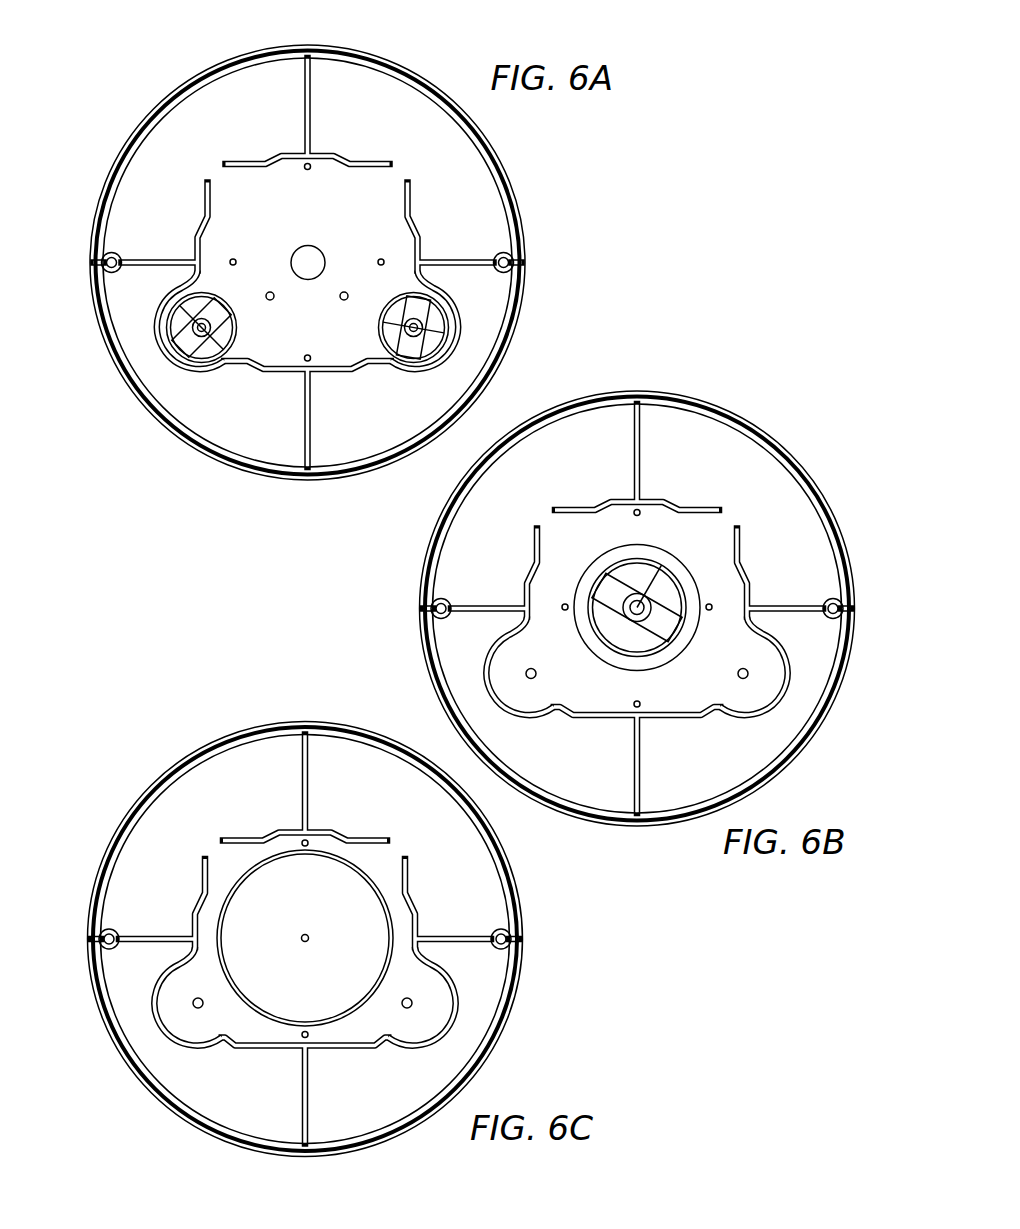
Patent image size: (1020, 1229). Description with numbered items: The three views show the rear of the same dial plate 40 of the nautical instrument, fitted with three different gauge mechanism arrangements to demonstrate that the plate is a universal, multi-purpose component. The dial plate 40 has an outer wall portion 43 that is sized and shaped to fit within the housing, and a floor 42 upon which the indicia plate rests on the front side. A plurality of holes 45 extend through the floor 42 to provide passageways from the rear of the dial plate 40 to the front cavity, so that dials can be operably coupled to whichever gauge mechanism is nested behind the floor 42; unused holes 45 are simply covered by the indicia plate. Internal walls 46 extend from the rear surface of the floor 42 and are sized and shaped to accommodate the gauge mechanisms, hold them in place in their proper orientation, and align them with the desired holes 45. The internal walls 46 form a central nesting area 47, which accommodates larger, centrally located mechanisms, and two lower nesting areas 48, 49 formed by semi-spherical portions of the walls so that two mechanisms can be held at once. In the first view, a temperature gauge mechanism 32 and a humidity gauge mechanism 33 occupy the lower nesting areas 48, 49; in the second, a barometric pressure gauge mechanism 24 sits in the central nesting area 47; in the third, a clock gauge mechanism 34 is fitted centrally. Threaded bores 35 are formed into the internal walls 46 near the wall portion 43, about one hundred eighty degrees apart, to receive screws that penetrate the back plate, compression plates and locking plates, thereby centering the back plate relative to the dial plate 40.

In FIG. 6B, the barometric pressure gauge mechanism 24 is at (733, 583).
In FIG. 6A, the temperature gauge mechanism 32 is at (478, 332).
In FIG. 6A, the humidity gauge mechanism 33 is at (142, 331).
In FIG. 6C, the clock gauge mechanism 34 is at (305, 938).
In FIG. 6A, the threaded bores 35 is at (310, 269).
In FIG. 6B, the threaded bores 35 is at (636, 611).
In FIG. 6C, the threaded bores 35 is at (307, 955).
In FIG. 6A, the dial plate 40 is at (307, 256).
In FIG. 6B, the dial plate 40 is at (637, 573).
In FIG. 6C, the dial plate 40 is at (305, 903).
In FIG. 6A, the floor 42 is at (307, 263).
In FIG. 6B, the floor 42 is at (675, 608).
In FIG. 6C, the floor 42 is at (343, 939).
In FIG. 6A, the wall portion 43 is at (337, 263).
In FIG. 6B, the wall portion 43 is at (643, 609).
In FIG. 6C, the wall portion 43 is at (328, 939).
In FIG. 6A, the holes 45 is at (330, 248).
In FIG. 6B, the holes 45 is at (637, 674).
In FIG. 6C, the holes 45 is at (294, 1008).
In FIG. 6A, the internal walls 46 is at (308, 262).
In FIG. 6B, the internal walls 46 is at (645, 608).
In FIG. 6C, the internal walls 46 is at (318, 939).
In FIG. 6A, the central nesting area 47 is at (265, 171).
In FIG. 6B, the lower nesting area 48 is at (464, 666).
In FIG. 6C, the lower nesting area 48 is at (142, 1014).
In FIG. 6B, the lower nesting area 49 is at (818, 666).
In FIG. 6C, the lower nesting area 49 is at (481, 1005).